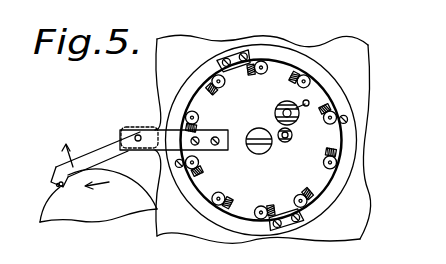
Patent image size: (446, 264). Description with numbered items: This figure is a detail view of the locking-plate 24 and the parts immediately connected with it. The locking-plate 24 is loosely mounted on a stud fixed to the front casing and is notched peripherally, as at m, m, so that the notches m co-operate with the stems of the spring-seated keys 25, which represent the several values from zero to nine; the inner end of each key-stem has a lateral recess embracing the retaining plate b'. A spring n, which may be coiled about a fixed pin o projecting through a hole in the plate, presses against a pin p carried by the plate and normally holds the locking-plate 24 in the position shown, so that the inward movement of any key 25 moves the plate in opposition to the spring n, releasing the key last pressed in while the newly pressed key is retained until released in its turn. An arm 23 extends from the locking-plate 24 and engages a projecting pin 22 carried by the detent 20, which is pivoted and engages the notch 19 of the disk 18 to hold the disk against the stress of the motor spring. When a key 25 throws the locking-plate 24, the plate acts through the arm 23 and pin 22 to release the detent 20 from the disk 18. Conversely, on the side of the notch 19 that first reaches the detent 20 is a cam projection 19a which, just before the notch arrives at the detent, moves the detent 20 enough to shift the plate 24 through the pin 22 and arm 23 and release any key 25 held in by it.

The disk 18 is at (98, 195).
The notch 19 is at (61, 187).
The cam projection 19a is at (56, 185).
The detent 20 is at (93, 154).
The projecting pin 22 is at (137, 130).
The arm 23 is at (177, 130).
The locking-plate 24 is at (261, 140).
The spring-seated keys 25 is at (214, 77).
The peripheral notches m is at (212, 95).
The spring n is at (300, 116).
The fixed pin o is at (279, 110).
The pin p is at (301, 102).
The retaining plate b' is at (261, 140).